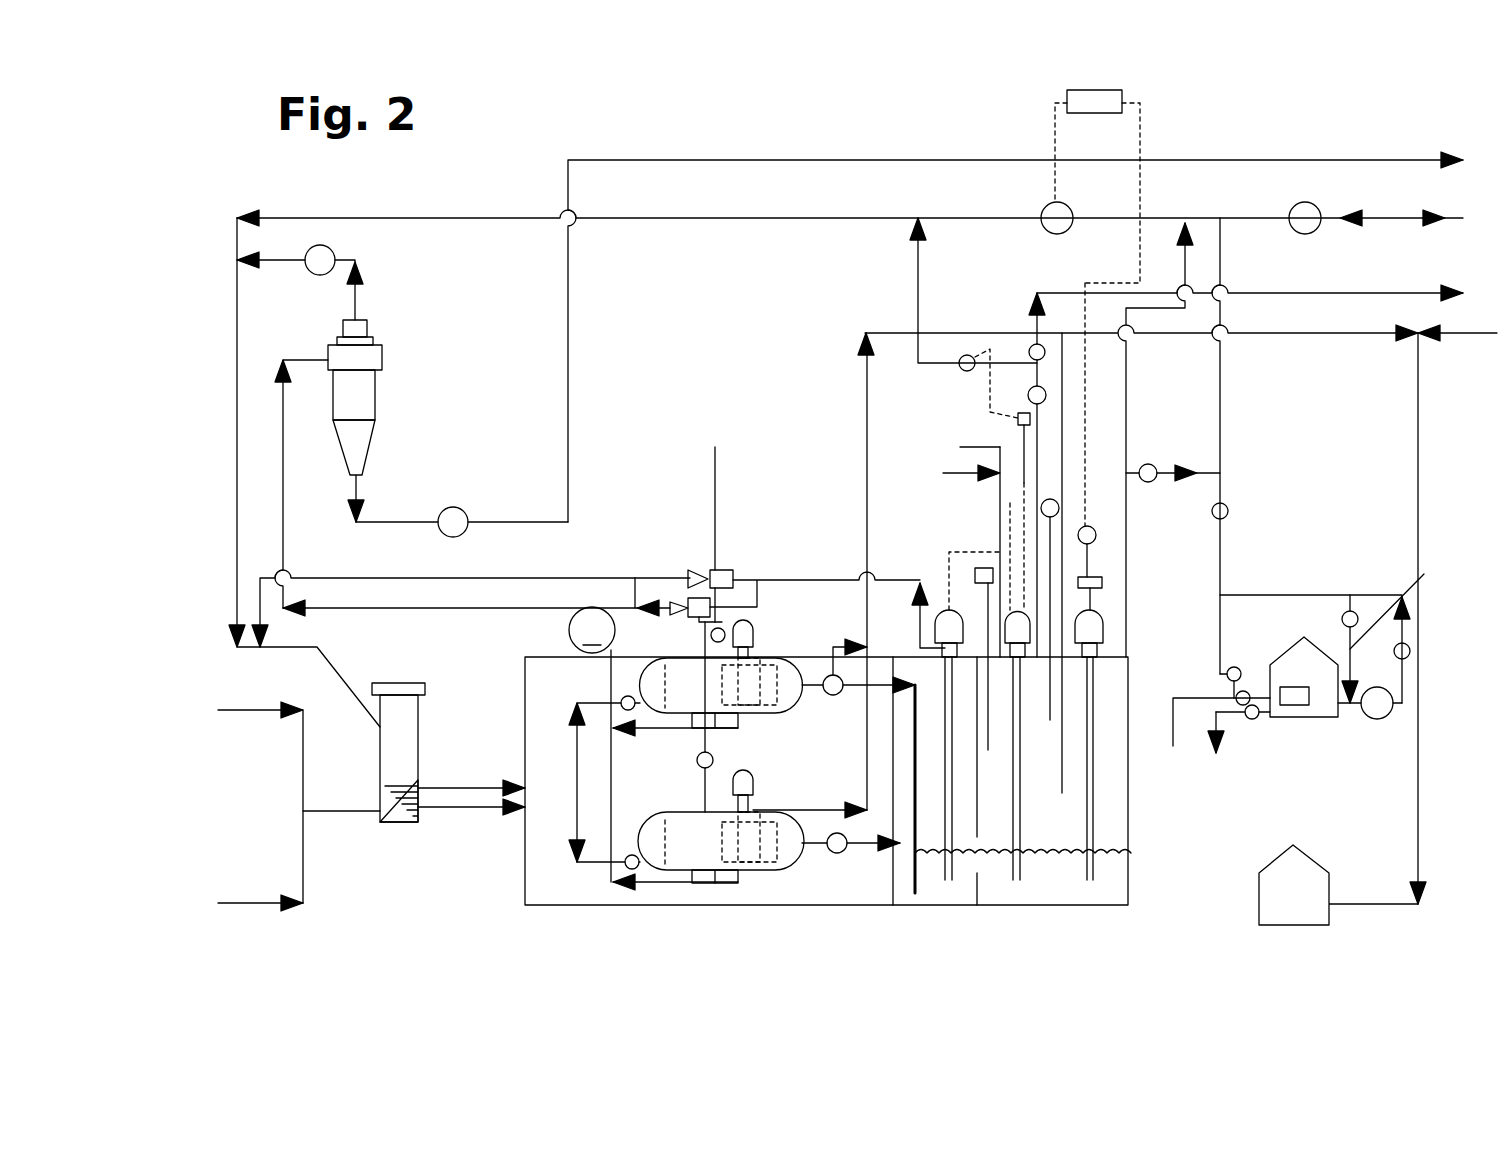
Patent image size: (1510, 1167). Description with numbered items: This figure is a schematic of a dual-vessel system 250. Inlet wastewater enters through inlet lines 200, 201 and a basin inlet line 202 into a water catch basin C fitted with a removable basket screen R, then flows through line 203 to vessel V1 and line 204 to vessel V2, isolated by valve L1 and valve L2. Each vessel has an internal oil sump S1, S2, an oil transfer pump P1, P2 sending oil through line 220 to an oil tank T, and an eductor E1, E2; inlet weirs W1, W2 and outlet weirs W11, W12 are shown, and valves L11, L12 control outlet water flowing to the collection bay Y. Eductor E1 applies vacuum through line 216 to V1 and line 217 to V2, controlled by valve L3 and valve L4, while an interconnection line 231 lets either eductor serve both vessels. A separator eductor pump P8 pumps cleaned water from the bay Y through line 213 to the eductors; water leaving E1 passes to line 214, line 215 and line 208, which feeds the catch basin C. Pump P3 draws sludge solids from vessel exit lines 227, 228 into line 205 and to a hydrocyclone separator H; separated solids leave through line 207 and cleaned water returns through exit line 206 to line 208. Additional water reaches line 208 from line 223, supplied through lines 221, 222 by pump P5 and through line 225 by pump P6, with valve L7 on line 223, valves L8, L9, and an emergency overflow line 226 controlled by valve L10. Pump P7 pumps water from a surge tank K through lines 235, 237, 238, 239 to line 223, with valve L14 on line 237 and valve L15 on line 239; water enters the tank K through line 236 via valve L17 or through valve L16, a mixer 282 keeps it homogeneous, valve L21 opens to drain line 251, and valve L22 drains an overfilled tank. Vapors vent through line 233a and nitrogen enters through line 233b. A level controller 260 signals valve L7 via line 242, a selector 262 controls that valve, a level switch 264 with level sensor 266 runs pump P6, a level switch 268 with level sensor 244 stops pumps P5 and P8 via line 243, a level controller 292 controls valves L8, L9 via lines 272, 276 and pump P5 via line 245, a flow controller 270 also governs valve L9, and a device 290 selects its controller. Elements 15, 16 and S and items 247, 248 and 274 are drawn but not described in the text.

The inlet line 200 is at (265, 715).
The inlet line 201 is at (260, 900).
The basin inlet line 202 is at (327, 813).
The line 203 is at (440, 810).
The line 204 is at (475, 787).
The line 205 is at (330, 612).
The exit line 206 is at (282, 260).
The line 207 is at (1330, 160).
The line 208 is at (238, 538).
The line 213 is at (941, 552).
The line 214 is at (637, 595).
The line 215 is at (418, 578).
The line 216 is at (707, 625).
The line 217 is at (757, 582).
The line 220 is at (1420, 879).
The line 221 is at (1037, 450).
The line 222 is at (917, 268).
The line 223 is at (1378, 218).
The line 225 is at (1125, 418).
The emergency overflow line 226 is at (1183, 468).
The vessel exit line 227 is at (677, 885).
The vessel exit line 228 is at (642, 728).
The interconnection line 231 is at (715, 447).
The vent line 233a is at (960, 447).
The nitrogen input line 233b is at (943, 473).
The line 235 is at (1349, 703).
The line 236 is at (1419, 599).
The line 237 is at (1402, 658).
The line 238 is at (1284, 595).
The line 239 is at (1221, 536).
The line 242 is at (1085, 390).
The line 243 is at (952, 552).
The level sensor 244 is at (988, 723).
The line 245 is at (1058, 500).
The control line 247 is at (990, 348).
The sensor 248 is at (988, 405).
The dual-vessel system 250 is at (462, 200).
The drain line 251 is at (1227, 755).
The level controller 260 is at (1096, 540).
The selector 262 is at (1098, 103).
The level switch 264 is at (1103, 580).
The level sensor 266 is at (1062, 760).
The level switch 268 is at (988, 568).
The flow controller 270 is at (1033, 348).
The line 272 is at (1010, 503).
The line 274 is at (1092, 598).
The line 276 is at (1023, 380).
The mixer 282 is at (1295, 689).
The device 290 is at (962, 360).
The level controller 292 is at (1062, 482).
The valve 15 is at (457, 505).
The valve 16 is at (337, 258).
The hydrocyclone separator H is at (363, 410).
The water catch basin C is at (393, 752).
The removable basket screen R is at (407, 813).
The collection bay Y is at (1083, 905).
The oil tank T is at (1288, 891).
The tank K is at (1306, 717).
The valve S is at (1290, 215).
The eductor E1 is at (695, 600).
The eductor E2 is at (725, 578).
The oil transfer pump P1 is at (750, 788).
The oil transfer pump P2 is at (748, 630).
The pump P3 is at (569, 630).
The pump P5 is at (1020, 627).
The pump P6 is at (1093, 627).
The pump P7 is at (1388, 714).
The separator eductor pump P8 is at (947, 627).
The vessel V1 is at (783, 867).
The vessel V2 is at (797, 707).
The inlet weir W1 is at (667, 833).
The inlet weir W2 is at (665, 680).
The outlet weir W11 is at (778, 837).
The outlet weir W12 is at (777, 680).
The internal oil sump S1 is at (748, 860).
The internal oil sump S2 is at (748, 705).
The valve L1 is at (627, 863).
The valve L2 is at (621, 700).
The valve L3 is at (700, 770).
The valve L4 is at (711, 637).
The valve L7 is at (1042, 215).
The valve L8 is at (1018, 413).
The valve L9 is at (1044, 388).
The valve L10 is at (1150, 483).
The valve L11 is at (840, 852).
The valve L12 is at (858, 652).
The valve L14 is at (1410, 653).
The valve L15 is at (1228, 511).
The valve L16 is at (1234, 671).
The valve L17 is at (1352, 611).
The valve L21 is at (1252, 719).
The valve L22 is at (1241, 694).